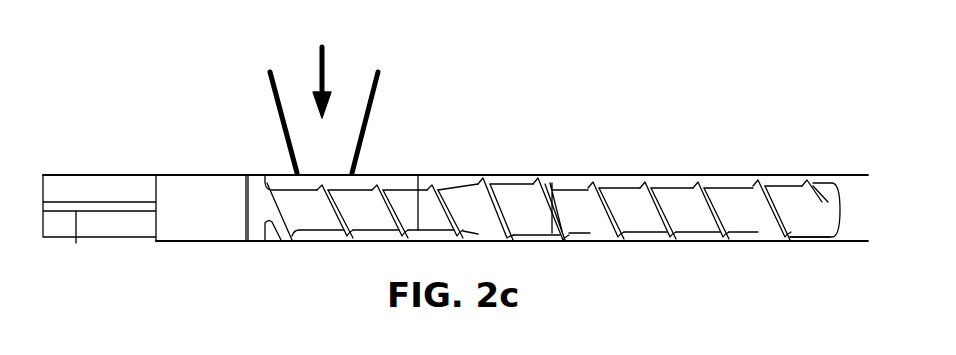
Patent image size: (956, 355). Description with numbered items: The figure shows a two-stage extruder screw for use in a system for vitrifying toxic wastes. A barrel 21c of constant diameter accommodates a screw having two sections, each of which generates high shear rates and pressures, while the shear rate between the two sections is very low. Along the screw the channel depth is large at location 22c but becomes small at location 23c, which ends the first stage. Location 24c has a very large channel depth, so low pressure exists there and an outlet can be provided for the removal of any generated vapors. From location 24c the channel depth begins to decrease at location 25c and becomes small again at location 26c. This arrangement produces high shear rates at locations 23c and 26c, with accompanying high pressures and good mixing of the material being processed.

The barrel 21c is at (392, 173).
The location of large channel depth 22c is at (419, 177).
The location of small channel depth 23c is at (513, 183).
The location of very large channel depth 24c is at (570, 175).
The location of decreasing channel depth 25c is at (623, 187).
The location of small channel depth 26c is at (777, 185).